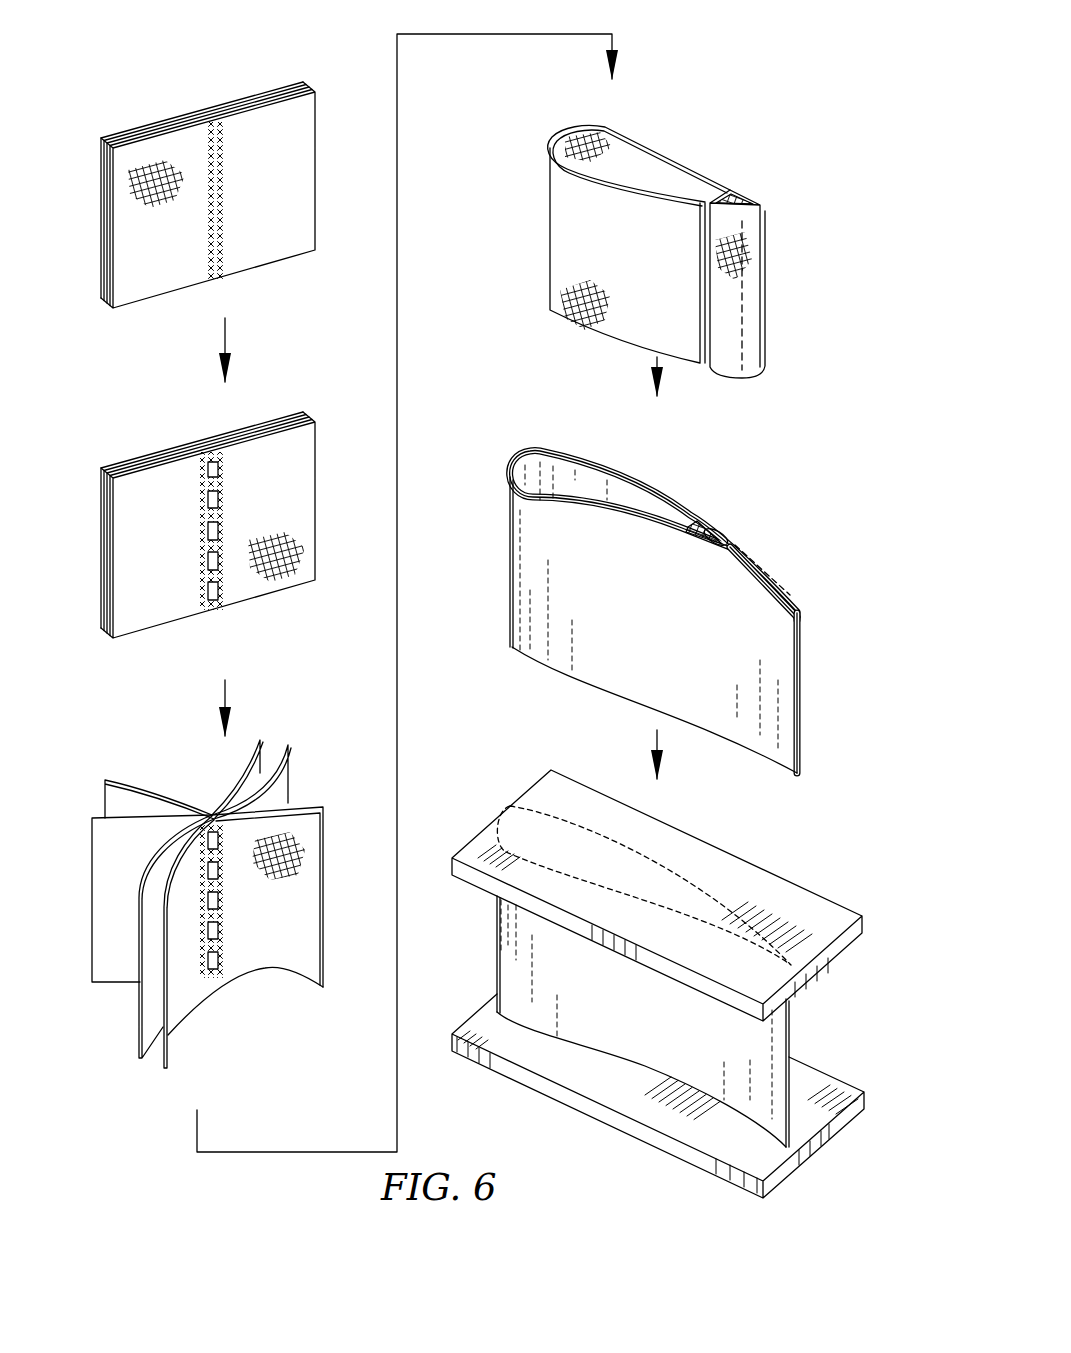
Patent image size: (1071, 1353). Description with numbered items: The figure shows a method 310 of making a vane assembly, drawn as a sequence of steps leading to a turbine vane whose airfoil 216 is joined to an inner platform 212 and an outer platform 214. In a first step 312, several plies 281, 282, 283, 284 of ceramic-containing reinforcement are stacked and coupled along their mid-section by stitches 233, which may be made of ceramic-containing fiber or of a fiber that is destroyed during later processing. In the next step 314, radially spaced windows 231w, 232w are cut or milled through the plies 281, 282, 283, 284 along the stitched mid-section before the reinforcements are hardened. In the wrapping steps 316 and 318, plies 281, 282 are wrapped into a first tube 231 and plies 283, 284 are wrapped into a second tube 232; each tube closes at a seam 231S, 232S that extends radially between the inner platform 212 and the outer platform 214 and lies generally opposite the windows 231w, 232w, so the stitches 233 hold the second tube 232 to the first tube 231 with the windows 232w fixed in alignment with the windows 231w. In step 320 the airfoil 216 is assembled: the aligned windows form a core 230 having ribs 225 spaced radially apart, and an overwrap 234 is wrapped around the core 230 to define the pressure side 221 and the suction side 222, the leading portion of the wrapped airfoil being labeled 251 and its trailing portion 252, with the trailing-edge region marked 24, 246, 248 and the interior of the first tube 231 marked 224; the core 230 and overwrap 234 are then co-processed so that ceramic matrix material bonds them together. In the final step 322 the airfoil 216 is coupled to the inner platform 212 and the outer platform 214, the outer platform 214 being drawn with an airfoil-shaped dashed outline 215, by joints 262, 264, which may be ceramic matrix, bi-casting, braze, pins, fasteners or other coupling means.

The inner platform 212 is at (508, 1076).
The outer platform 214 is at (553, 796).
The airfoil-shaped opening 215 is at (699, 856).
The airfoil 216 is at (507, 461).
The pressure side 221 is at (640, 663).
The suction side 222 is at (687, 521).
The suction side 224 is at (552, 475).
The ribs 225 is at (713, 194).
The core 230 is at (681, 134).
The first tube 231 is at (634, 129).
The seam of first tube 231S is at (564, 144).
The windows of first tube 231w is at (207, 473).
The second tube 232 is at (770, 194).
The seam of second tube 232S is at (758, 292).
The windows of second tube 232w is at (474, 595).
The stitches 233 is at (225, 171).
The overwrap 234 is at (577, 643).
The trailing edge cooling slot 24 is at (764, 556).
The trailing edge 246 is at (802, 704).
The trailing edge portion 248 is at (794, 577).
The leading edge wall 251 is at (510, 568).
The trailing edge wall 252 is at (802, 662).
The joint 262 is at (645, 1081).
The joint 264 is at (679, 984).
The ply of ceramic-containing reinforcement 281 is at (95, 176).
The ply of ceramic-containing reinforcement 282 is at (95, 189).
The ply of ceramic-containing reinforcement 283 is at (128, 129).
The ply of ceramic-containing reinforcement 284 is at (191, 120).
The method of making the vane assembly 310 is at (752, 84).
The ply coupling step 312 is at (313, 77).
The window forming step 314 is at (293, 398).
The first tube wrapping step 316 is at (293, 741).
The second tube wrapping step 318 is at (824, 142).
The airfoil assembly step 320 is at (832, 536).
The platform coupling step 322 is at (838, 890).